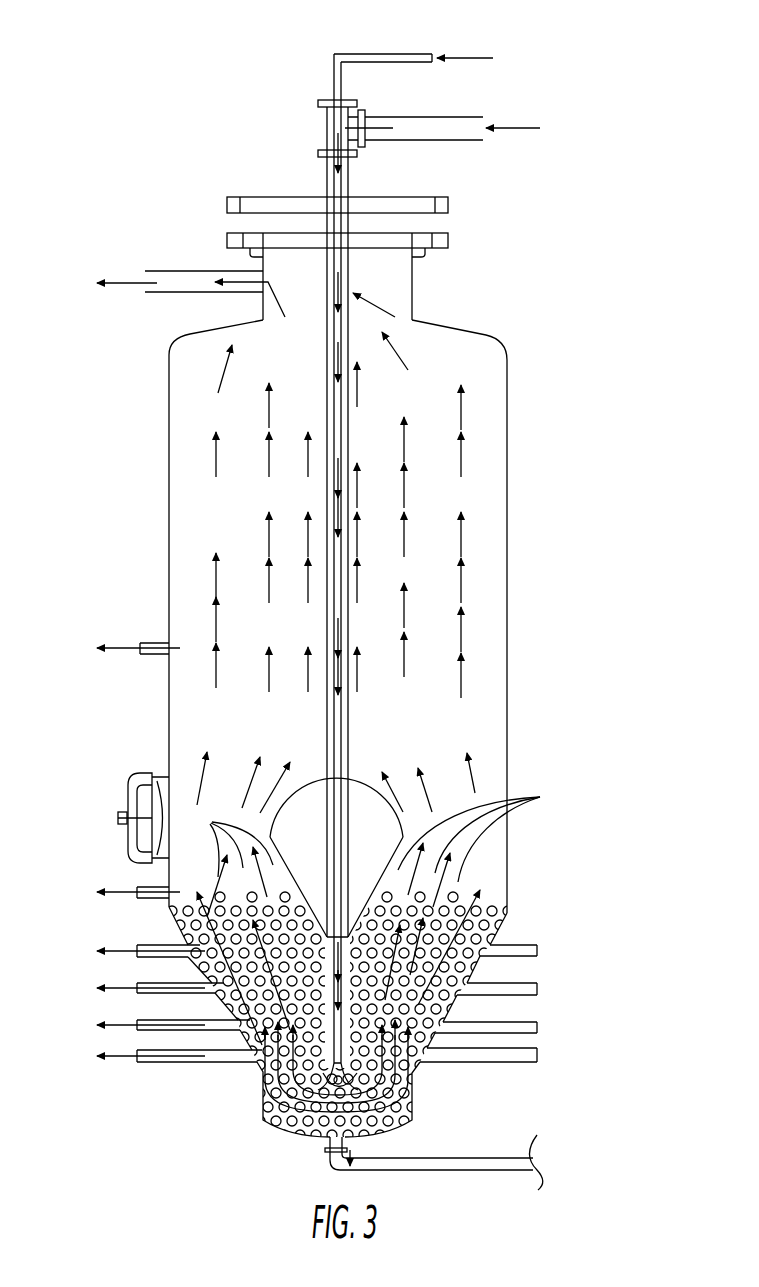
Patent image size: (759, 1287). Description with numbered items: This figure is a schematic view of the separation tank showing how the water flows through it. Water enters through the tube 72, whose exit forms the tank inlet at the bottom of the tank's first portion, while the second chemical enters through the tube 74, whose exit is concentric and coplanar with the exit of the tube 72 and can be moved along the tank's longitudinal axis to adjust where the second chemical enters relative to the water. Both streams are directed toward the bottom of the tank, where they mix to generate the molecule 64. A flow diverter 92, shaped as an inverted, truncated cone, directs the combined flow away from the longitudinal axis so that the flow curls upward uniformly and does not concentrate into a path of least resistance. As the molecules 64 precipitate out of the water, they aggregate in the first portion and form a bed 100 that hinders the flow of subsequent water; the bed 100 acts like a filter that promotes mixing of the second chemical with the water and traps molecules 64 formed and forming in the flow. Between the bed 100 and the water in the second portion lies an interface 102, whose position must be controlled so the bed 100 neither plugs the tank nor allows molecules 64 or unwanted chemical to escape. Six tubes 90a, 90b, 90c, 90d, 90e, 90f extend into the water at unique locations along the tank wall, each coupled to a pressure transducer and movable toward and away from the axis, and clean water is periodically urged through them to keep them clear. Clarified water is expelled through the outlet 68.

The tube 74 is at (410, 53).
The tube 72 is at (472, 110).
The outlet 68 is at (166, 270).
The flow diverter 92 is at (360, 770).
The interface 102 is at (210, 824).
The molecule 64 is at (428, 892).
The tube 90a is at (118, 1062).
The tube 90b is at (115, 1028).
The tube 90c is at (117, 990).
The tube 90d is at (122, 947).
The tube 90e is at (115, 888).
The tube 90f is at (128, 652).
The bed 100 is at (643, 897).